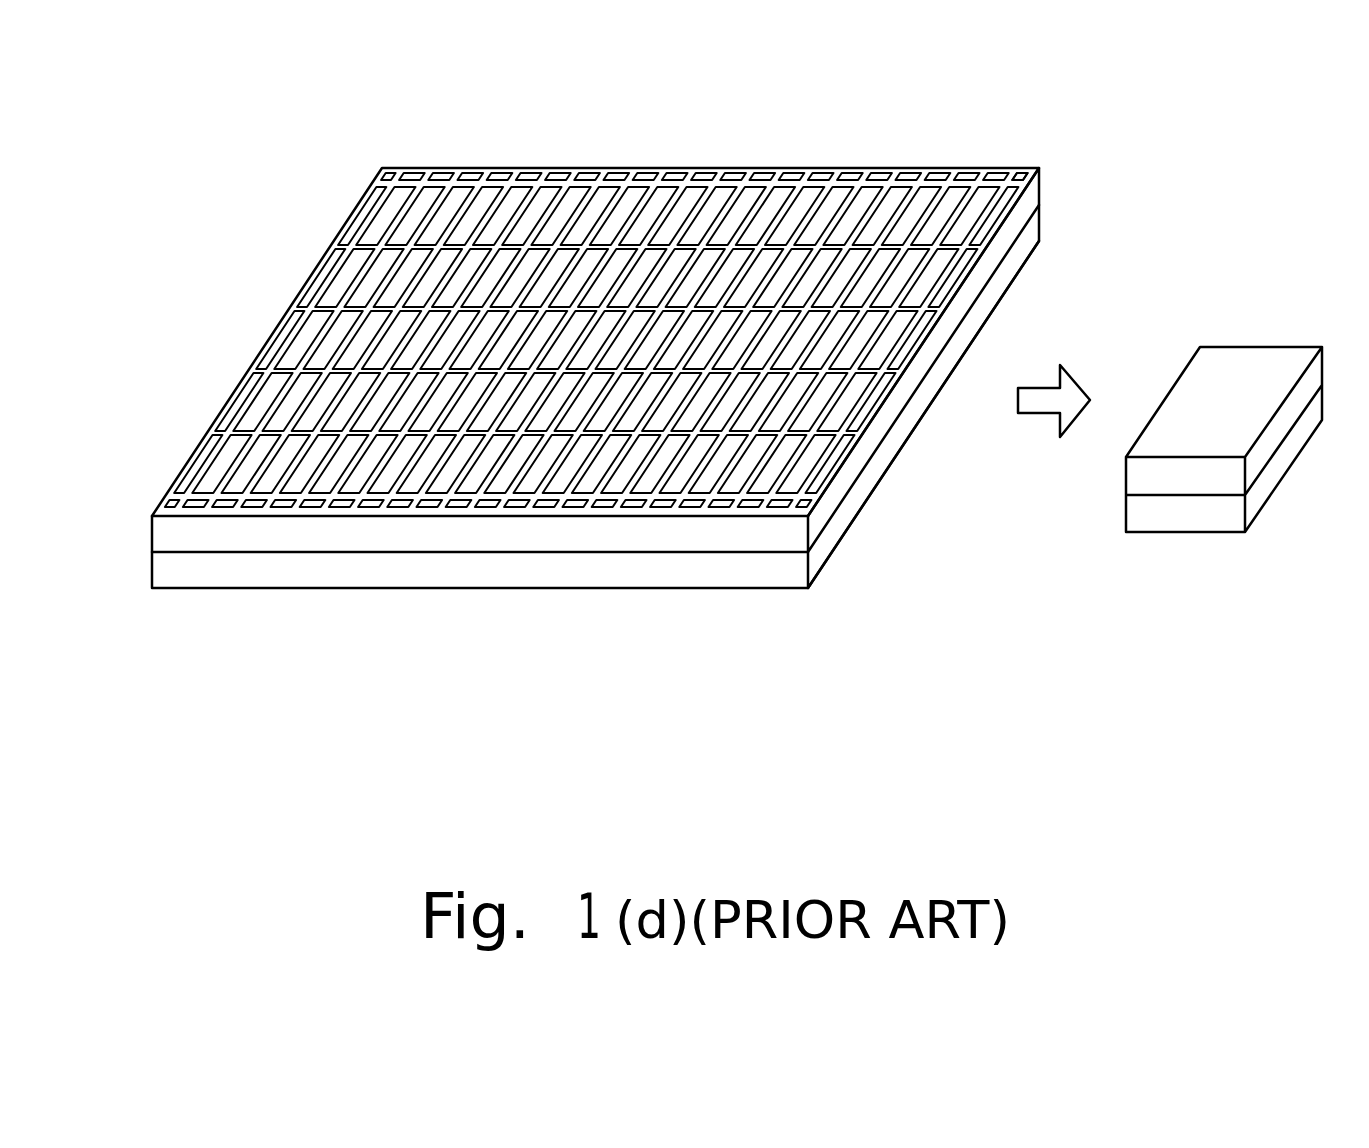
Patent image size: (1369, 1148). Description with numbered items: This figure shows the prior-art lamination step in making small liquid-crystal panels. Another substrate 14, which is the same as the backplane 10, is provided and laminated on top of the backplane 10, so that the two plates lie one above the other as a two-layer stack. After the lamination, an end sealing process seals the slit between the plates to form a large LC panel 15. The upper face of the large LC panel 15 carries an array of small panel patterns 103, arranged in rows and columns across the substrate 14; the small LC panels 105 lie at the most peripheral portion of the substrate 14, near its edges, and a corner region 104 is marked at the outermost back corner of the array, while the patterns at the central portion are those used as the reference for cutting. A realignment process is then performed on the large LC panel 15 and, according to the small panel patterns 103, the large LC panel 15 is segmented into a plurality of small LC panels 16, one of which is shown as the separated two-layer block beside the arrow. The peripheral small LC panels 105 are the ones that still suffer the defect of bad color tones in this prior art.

The backplane 10 is at (175, 570).
The substrate 14 is at (177, 537).
The large LC panel 15 is at (250, 325).
The small LC panels 16 is at (1368, 522).
The small panel patterns 103 is at (620, 260).
The corner chip region 104 is at (998, 180).
The small LC panels of the most peripheral portion 105 is at (430, 197).